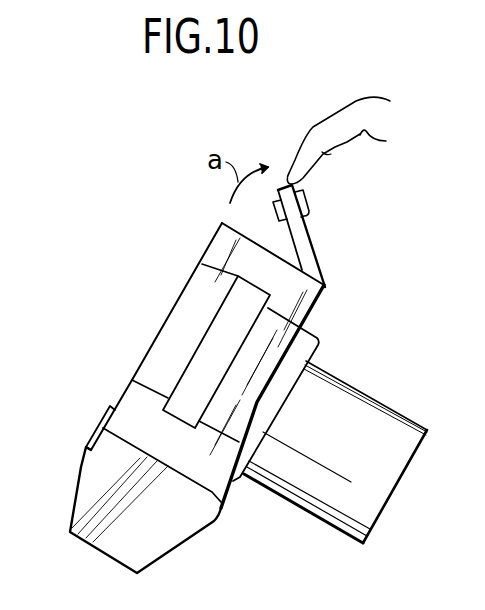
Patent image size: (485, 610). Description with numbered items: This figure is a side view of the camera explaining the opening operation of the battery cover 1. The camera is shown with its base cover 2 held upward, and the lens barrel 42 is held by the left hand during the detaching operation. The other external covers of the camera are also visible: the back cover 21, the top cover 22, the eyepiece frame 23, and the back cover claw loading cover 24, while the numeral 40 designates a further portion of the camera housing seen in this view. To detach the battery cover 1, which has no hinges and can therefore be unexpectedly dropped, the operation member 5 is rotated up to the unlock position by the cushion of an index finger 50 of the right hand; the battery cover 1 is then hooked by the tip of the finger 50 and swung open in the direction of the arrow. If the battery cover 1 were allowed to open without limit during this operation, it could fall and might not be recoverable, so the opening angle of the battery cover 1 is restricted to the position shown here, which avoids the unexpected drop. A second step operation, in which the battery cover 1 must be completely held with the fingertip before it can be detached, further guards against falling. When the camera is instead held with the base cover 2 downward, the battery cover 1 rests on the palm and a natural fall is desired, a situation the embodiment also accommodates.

The battery cover 1 is at (304, 256).
The base cover 2 is at (211, 250).
The operation member 5 is at (306, 203).
The back cover 21 is at (170, 332).
The top cover 22 is at (216, 460).
The eyepiece frame 23 is at (100, 430).
The back cover claw loading cover 24 is at (216, 327).
The cap 40 is at (187, 528).
The lens barrel 42 is at (305, 490).
The index finger 50 is at (313, 130).